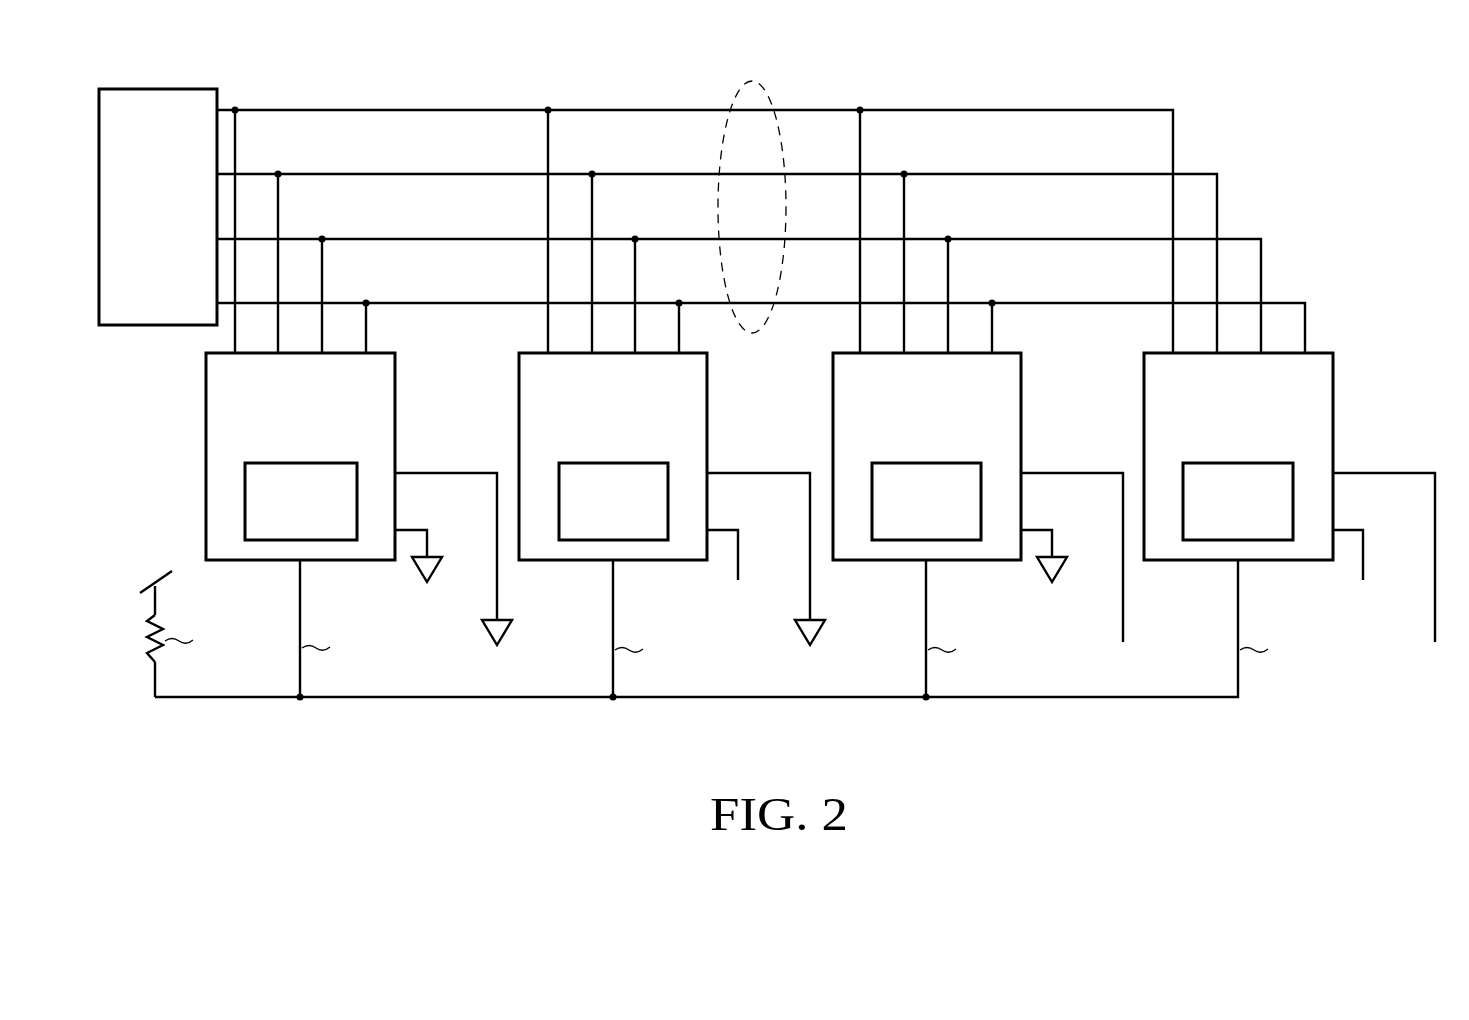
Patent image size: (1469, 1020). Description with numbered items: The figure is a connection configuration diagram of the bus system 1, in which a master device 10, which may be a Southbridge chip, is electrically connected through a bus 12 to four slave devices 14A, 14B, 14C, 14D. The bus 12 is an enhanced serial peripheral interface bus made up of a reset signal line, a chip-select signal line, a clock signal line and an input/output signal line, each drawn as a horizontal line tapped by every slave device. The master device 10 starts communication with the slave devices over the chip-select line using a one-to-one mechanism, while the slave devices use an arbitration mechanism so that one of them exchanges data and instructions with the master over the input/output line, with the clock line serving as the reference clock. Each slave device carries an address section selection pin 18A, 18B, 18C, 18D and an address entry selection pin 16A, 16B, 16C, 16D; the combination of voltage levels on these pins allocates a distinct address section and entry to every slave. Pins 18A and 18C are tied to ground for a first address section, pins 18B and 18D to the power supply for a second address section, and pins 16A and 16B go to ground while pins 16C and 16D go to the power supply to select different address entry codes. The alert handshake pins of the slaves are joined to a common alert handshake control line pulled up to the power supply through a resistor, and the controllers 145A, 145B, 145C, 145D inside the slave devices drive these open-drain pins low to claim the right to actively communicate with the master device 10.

The bus system 1 is at (1364, 73).
The master device 10 is at (103, 89).
The bus 12 is at (752, 81).
The slave device 14A is at (395, 395).
The slave device 14B is at (707, 395).
The slave device 14C is at (1021, 395).
The slave device 14D is at (1333, 395).
The address entry selection pin 16A is at (410, 473).
The address entry selection pin 16B is at (722, 473).
The address entry selection pin 16C is at (1036, 473).
The address entry selection pin 16D is at (1348, 473).
The address section selection pin 18A is at (410, 530).
The address section selection pin 18B is at (722, 530).
The address section selection pin 18C is at (1036, 530).
The address section selection pin 18D is at (1348, 530).
The controller 145A is at (336, 517).
The controller 145B is at (652, 517).
The controller 145C is at (964, 517).
The controller 145D is at (1275, 517).